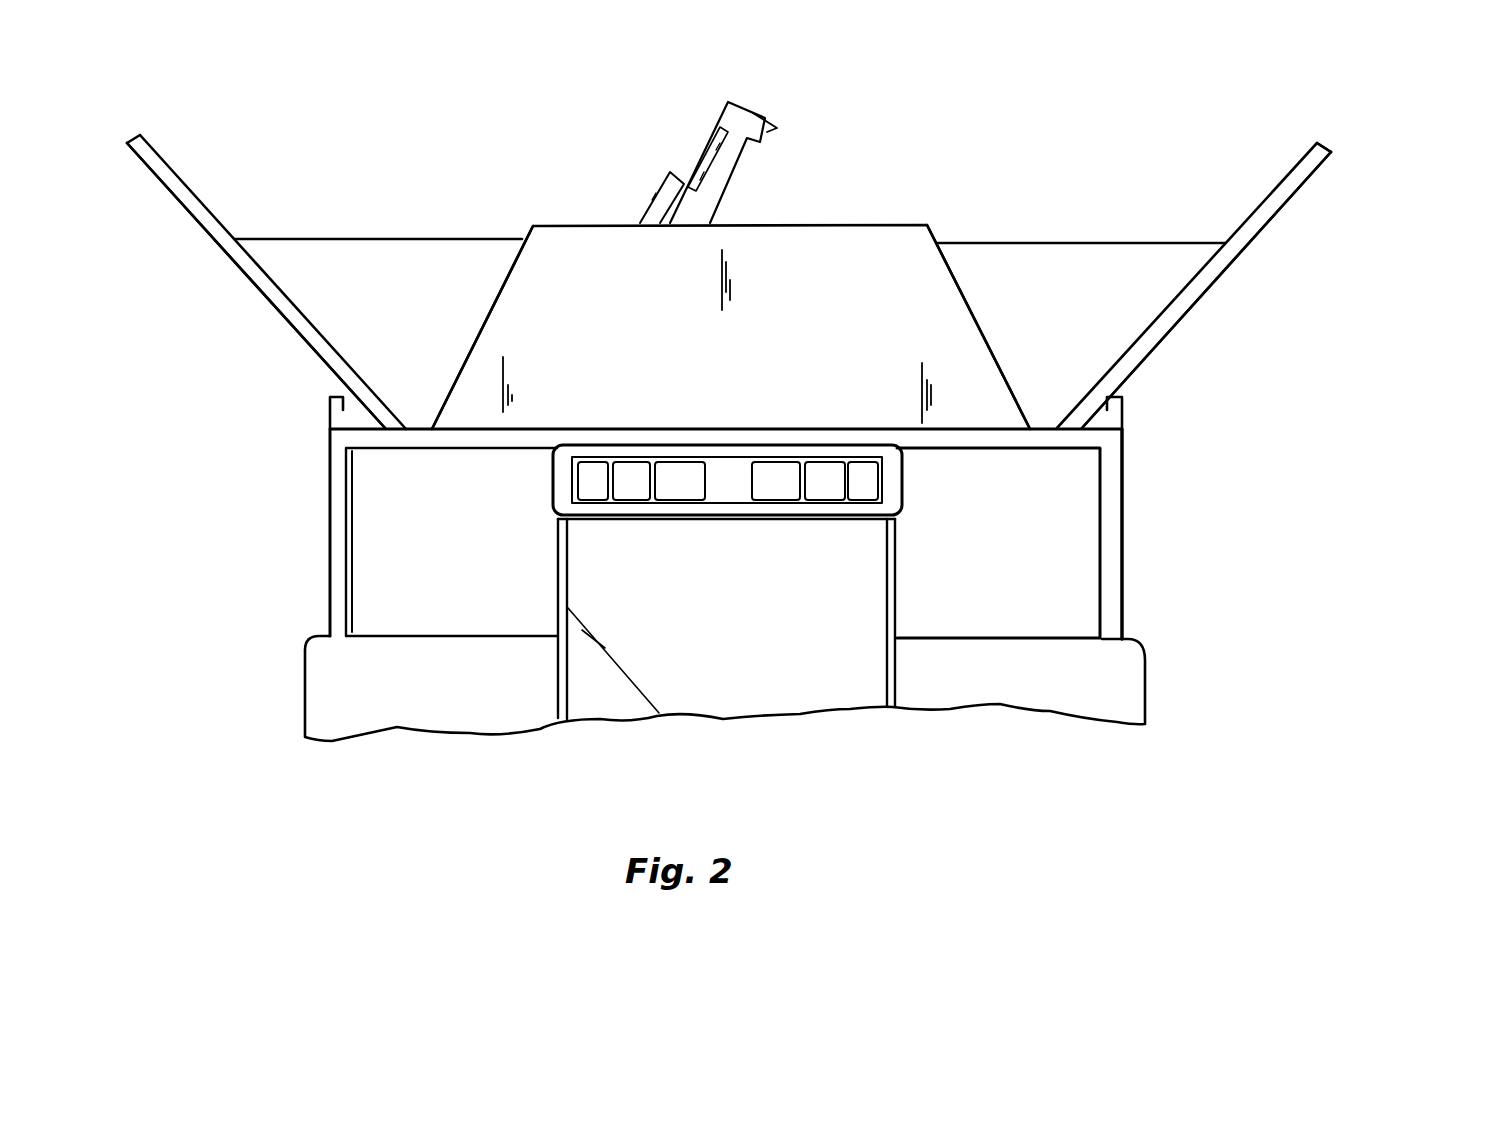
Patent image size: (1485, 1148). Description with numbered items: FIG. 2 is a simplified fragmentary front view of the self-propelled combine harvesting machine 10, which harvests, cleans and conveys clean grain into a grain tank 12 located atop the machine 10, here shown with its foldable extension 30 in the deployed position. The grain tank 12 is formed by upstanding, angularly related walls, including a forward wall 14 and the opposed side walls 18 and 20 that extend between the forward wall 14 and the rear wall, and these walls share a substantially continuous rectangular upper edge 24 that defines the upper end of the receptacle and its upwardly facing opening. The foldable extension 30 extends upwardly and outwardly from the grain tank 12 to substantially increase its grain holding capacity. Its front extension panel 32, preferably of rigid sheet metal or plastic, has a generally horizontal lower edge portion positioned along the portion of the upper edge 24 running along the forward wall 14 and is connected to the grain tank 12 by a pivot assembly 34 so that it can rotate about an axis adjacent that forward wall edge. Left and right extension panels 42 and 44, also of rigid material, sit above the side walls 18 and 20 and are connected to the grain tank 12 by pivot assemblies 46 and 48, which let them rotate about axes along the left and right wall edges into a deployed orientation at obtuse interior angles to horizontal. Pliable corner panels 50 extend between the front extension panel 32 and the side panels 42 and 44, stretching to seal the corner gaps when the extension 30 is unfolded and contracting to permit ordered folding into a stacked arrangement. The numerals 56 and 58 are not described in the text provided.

The self-propelled combine harvesting machine 10 is at (353, 794).
The grain tank 12 is at (328, 537).
The forward wall 14 is at (1058, 515).
The side wall 18 is at (1123, 592).
The side wall 20 is at (328, 605).
The upper edge 24 is at (602, 429).
The foldable extension 30 is at (1343, 150).
The front extension panel 32 is at (825, 255).
The pivot assembly 34 is at (731, 429).
The left extension panel 42 is at (1197, 300).
The right extension panel 44 is at (273, 308).
The pivot assembly 46 is at (1122, 425).
The pivot assembly 48 is at (332, 410).
The pliable corner panel 50 is at (392, 239).
The sloped hopper side 56 is at (497, 300).
The arm edge 58 is at (213, 243).